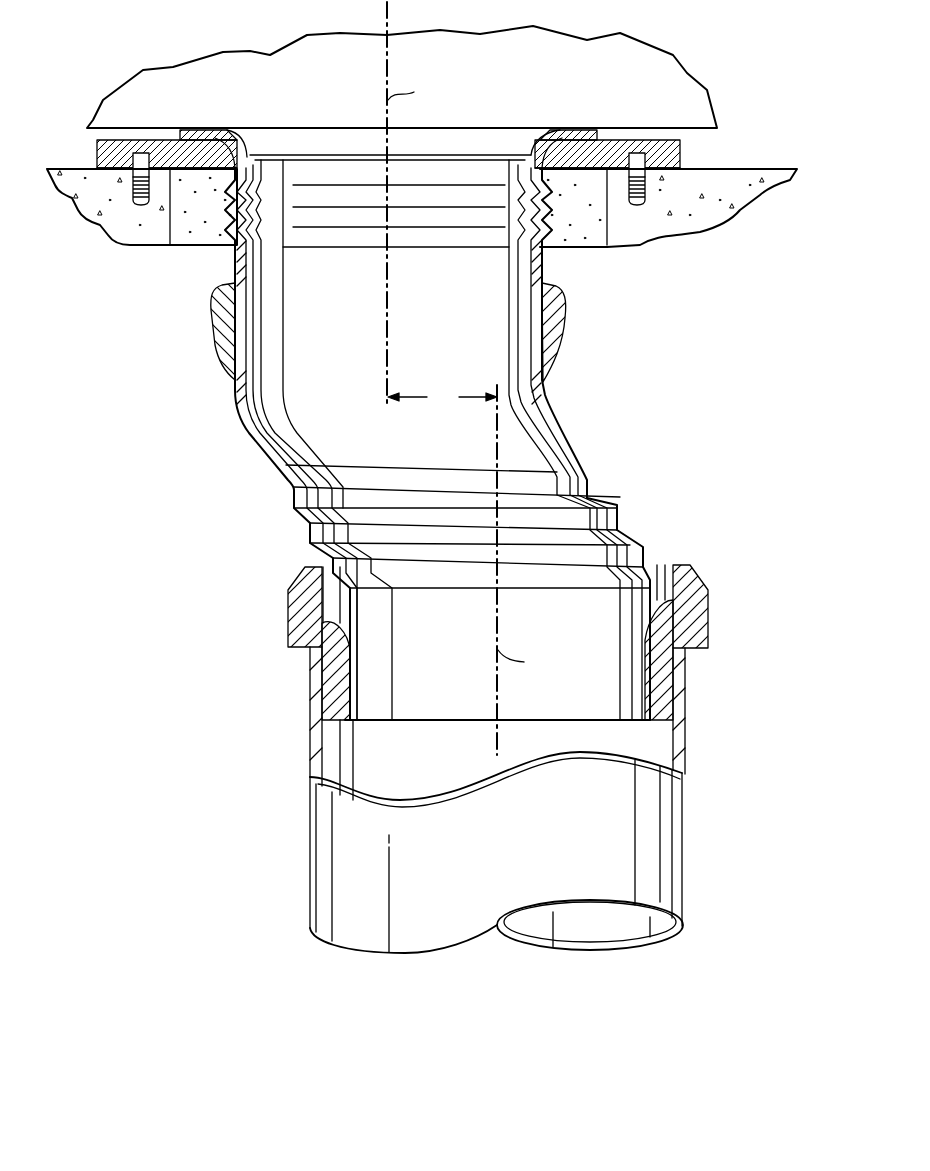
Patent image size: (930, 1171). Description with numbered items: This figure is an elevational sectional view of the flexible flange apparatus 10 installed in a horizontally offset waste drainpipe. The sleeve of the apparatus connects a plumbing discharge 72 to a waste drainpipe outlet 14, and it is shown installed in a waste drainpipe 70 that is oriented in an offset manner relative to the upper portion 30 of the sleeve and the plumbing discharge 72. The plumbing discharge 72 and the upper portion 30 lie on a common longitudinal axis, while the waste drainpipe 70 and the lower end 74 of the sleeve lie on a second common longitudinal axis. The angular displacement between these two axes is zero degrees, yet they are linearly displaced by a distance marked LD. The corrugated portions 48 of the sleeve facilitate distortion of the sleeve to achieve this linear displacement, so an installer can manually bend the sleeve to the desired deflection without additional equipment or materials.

The flexible flange apparatus 10 is at (133, 450).
The waste drainpipe outlet 14 is at (569, 440).
The upper portion 30 is at (579, 126).
The corrugated portion 48 is at (547, 248).
The waste drainpipe 70 is at (308, 705).
The plumbing discharge 72 is at (253, 52).
The lower end 74 is at (432, 723).